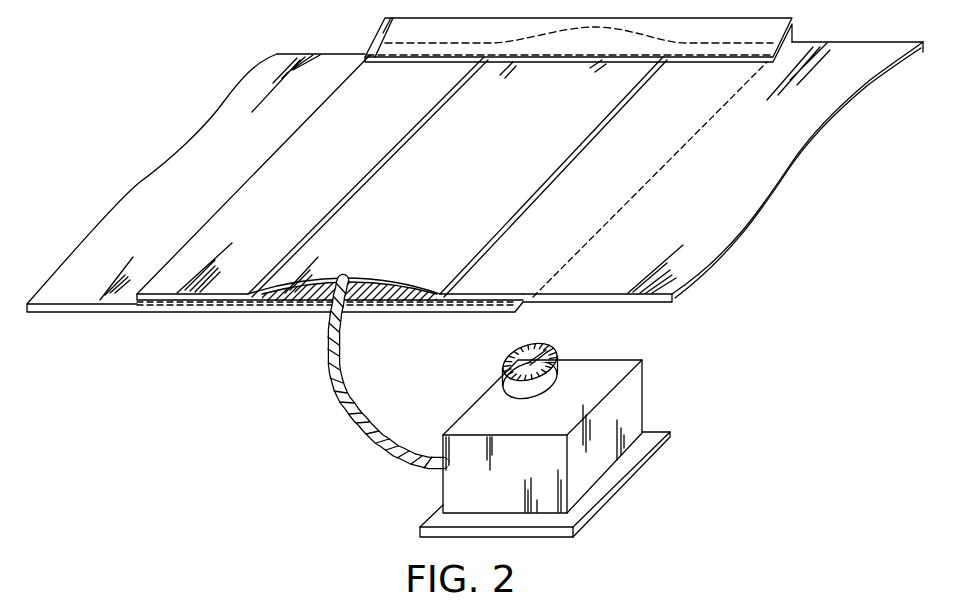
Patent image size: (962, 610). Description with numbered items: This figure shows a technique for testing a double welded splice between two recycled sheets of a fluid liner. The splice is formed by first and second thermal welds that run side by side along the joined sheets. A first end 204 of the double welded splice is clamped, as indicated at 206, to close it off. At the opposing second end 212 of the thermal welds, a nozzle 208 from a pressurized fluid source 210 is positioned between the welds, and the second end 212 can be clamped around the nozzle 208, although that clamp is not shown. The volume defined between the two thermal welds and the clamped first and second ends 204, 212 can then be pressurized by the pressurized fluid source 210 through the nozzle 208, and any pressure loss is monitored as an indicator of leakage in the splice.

The first end 204 is at (566, 70).
The clamp 206 is at (745, 40).
The nozzle 208 is at (327, 316).
The pressurized fluid source 210 is at (497, 502).
The second end 212 is at (374, 264).